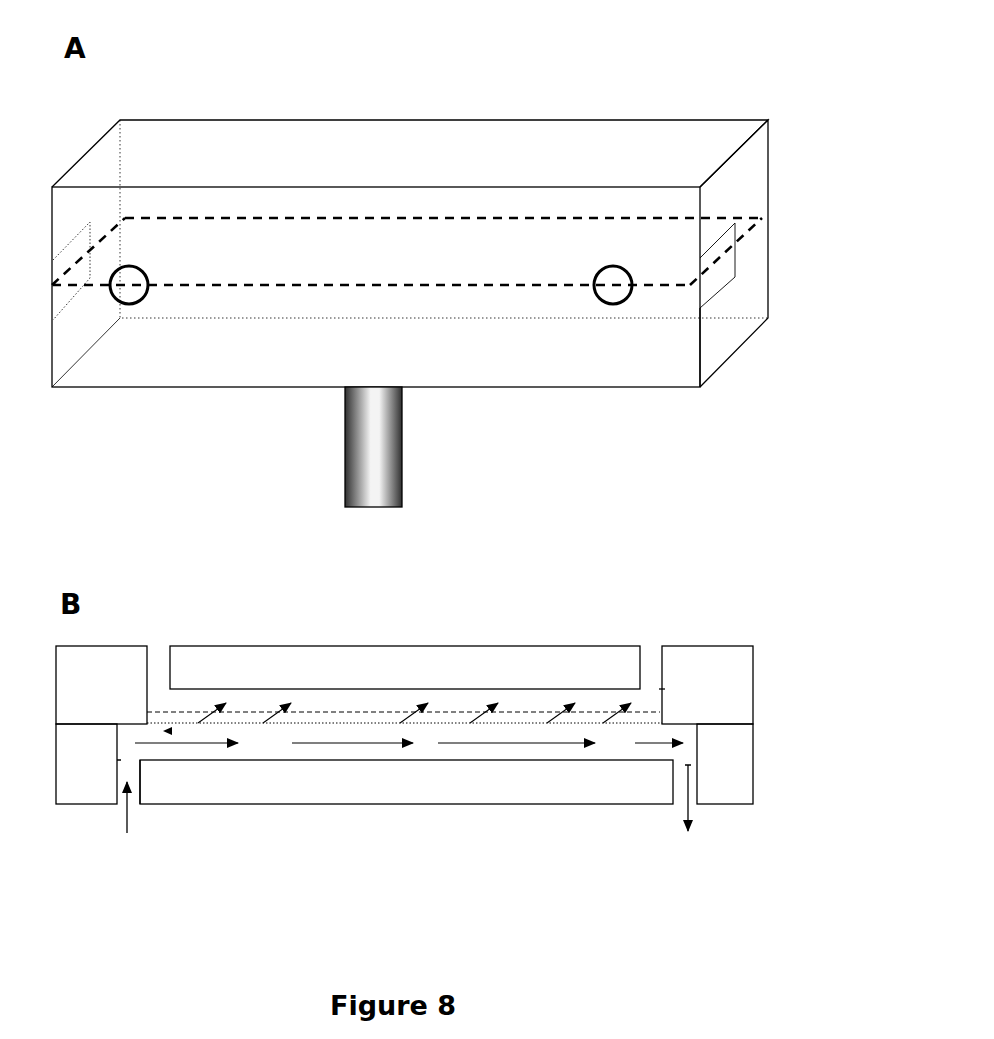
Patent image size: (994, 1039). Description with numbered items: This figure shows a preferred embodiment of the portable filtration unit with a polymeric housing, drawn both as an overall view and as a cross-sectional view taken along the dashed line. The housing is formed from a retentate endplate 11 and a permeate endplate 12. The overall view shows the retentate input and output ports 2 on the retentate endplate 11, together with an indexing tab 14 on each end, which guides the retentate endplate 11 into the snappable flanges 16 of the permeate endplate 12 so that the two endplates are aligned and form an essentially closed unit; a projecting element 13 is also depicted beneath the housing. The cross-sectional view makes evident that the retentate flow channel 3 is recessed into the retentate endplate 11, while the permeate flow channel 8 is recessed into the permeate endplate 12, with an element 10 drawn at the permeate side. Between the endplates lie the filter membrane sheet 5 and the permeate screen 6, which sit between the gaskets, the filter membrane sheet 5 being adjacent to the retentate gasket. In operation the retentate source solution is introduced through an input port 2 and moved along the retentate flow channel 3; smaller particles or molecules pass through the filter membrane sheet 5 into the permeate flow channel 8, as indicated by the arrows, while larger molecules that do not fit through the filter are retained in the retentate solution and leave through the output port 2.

The retentate input and output ports 2 is at (585, 290).
The retentate flow channel 3 is at (363, 757).
The filter membrane sheet 5 is at (378, 717).
The permeate screen 6 is at (247, 708).
The permeate flow channel 8 is at (492, 698).
The top plate 10 is at (650, 643).
The retentate endplate 11 is at (160, 363).
The permeate endplate 12 is at (753, 182).
The connector pin 13 is at (393, 472).
The indexing tab 14 is at (717, 265).
The snappable flanges 16 is at (717, 345).